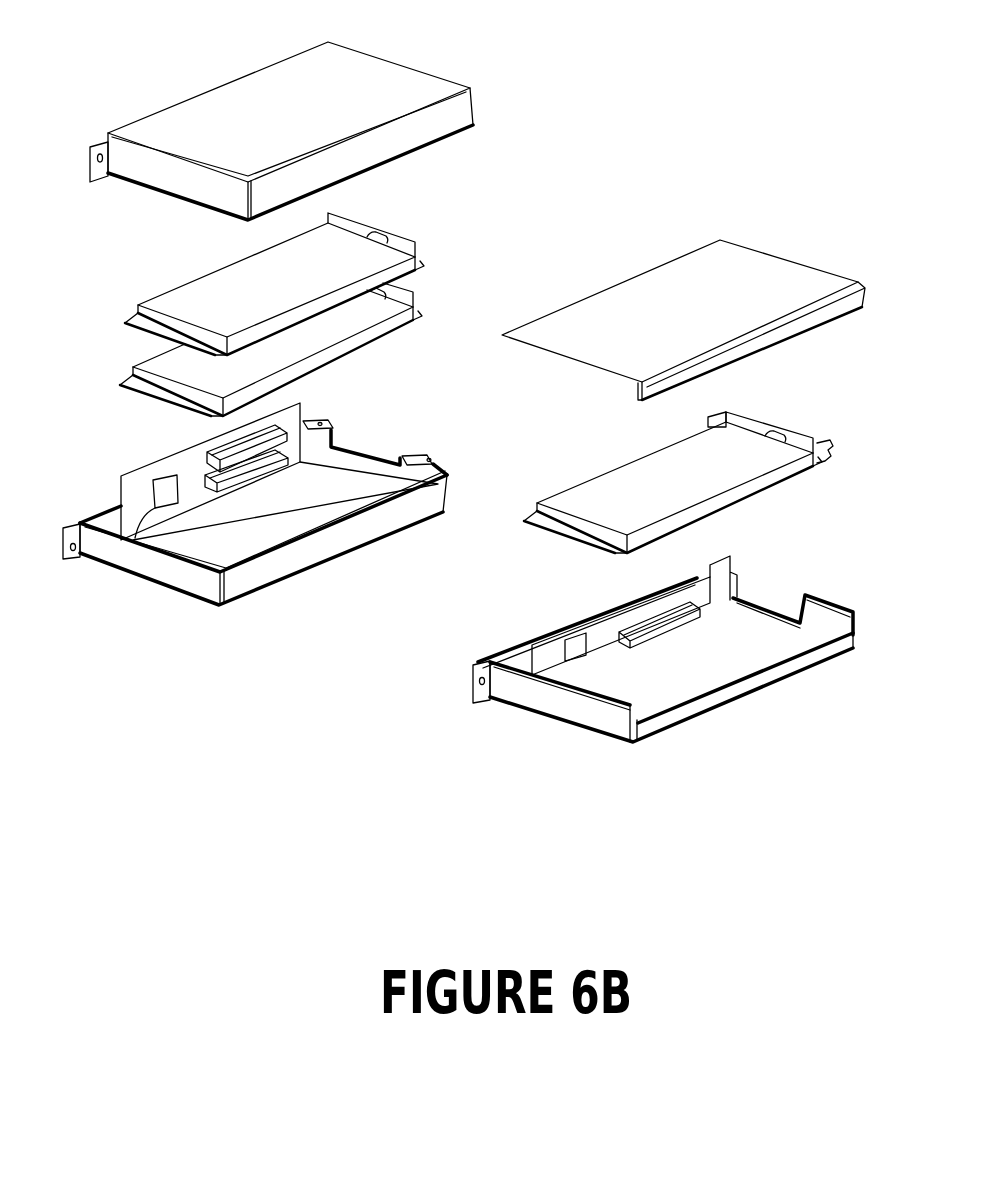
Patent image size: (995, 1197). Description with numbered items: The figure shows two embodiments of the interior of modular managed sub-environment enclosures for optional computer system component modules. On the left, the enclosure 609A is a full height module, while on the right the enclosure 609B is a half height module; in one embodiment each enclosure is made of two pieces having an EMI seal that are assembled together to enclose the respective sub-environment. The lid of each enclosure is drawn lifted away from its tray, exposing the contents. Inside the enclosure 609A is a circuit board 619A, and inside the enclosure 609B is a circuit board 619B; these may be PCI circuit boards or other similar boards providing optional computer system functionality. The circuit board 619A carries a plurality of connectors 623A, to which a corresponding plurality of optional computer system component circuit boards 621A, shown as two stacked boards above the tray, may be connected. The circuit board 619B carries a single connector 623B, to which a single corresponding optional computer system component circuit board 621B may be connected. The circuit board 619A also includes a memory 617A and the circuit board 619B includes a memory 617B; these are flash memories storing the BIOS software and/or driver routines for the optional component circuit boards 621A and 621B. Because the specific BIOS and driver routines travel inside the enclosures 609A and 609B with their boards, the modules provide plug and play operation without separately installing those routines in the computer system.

The enclosure 609A is at (369, 52).
The enclosure 609B is at (763, 253).
The memory 617A is at (134, 541).
The memory 617B is at (575, 657).
The circuit board 619A is at (132, 490).
The circuit board 619B is at (552, 652).
The optional computer system component circuit boards 621A is at (416, 260).
The optional computer system component circuit board 621B is at (817, 442).
The connectors 623A is at (294, 422).
The connector 623B is at (628, 622).